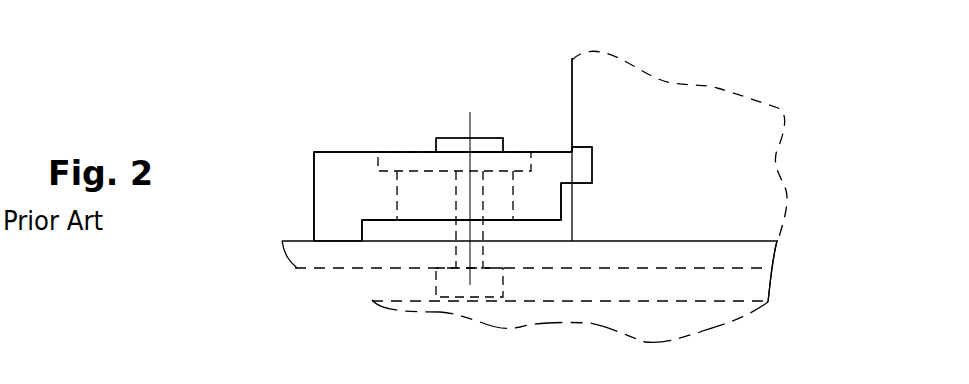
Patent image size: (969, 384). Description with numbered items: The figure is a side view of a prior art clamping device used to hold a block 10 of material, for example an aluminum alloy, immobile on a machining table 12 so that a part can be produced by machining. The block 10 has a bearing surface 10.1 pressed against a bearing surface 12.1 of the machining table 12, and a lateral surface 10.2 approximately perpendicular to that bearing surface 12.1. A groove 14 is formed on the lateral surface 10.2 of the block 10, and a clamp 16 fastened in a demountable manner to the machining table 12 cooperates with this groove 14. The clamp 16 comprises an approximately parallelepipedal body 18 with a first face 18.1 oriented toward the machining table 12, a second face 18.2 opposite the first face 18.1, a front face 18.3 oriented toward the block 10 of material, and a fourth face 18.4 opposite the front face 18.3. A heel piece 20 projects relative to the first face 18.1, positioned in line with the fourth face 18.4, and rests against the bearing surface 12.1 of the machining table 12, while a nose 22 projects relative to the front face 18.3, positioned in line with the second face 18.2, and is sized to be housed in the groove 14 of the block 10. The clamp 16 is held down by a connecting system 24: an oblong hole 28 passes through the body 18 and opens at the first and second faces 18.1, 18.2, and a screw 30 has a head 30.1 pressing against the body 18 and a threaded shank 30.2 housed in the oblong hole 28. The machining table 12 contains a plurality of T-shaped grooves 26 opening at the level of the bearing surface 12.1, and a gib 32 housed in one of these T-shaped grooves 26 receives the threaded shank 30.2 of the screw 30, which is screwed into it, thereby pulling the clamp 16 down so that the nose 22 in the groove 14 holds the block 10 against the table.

The block of material 10 is at (697, 127).
The bearing surface 10.1 is at (722, 241).
The lateral surface 10.2 is at (572, 95).
The machining table 12 is at (717, 320).
The bearing surface 12.1 is at (740, 241).
The groove 14 is at (582, 147).
The clamp 16 is at (385, 142).
The body 18 is at (357, 190).
The first face 18.1 is at (387, 220).
The second face 18.2 is at (408, 152).
The front face 18.3 is at (573, 202).
The fourth face 18.4 is at (314, 198).
The heel piece 20 is at (338, 228).
The nose 22 is at (568, 168).
The connecting system 24 is at (461, 115).
The T-shaped groove 26 is at (656, 302).
The oblong hole 28 is at (395, 188).
The screw 30 is at (482, 143).
The head 30.1 is at (497, 146).
The threaded shank 30.2 is at (455, 200).
The gib 32 is at (503, 283).